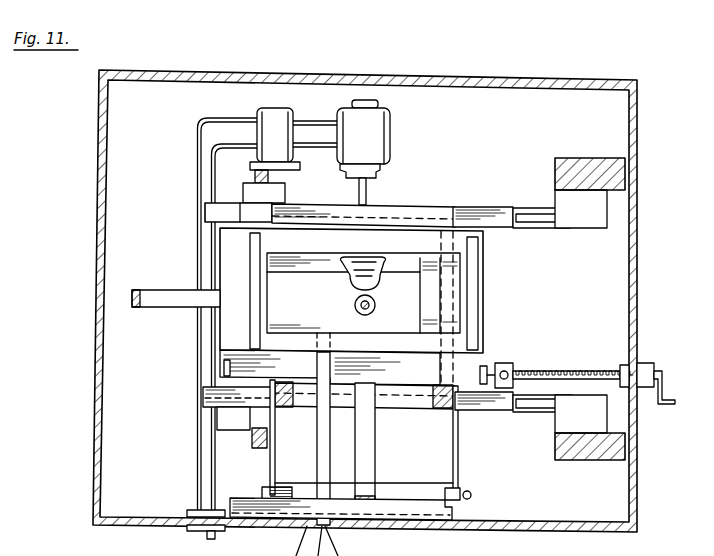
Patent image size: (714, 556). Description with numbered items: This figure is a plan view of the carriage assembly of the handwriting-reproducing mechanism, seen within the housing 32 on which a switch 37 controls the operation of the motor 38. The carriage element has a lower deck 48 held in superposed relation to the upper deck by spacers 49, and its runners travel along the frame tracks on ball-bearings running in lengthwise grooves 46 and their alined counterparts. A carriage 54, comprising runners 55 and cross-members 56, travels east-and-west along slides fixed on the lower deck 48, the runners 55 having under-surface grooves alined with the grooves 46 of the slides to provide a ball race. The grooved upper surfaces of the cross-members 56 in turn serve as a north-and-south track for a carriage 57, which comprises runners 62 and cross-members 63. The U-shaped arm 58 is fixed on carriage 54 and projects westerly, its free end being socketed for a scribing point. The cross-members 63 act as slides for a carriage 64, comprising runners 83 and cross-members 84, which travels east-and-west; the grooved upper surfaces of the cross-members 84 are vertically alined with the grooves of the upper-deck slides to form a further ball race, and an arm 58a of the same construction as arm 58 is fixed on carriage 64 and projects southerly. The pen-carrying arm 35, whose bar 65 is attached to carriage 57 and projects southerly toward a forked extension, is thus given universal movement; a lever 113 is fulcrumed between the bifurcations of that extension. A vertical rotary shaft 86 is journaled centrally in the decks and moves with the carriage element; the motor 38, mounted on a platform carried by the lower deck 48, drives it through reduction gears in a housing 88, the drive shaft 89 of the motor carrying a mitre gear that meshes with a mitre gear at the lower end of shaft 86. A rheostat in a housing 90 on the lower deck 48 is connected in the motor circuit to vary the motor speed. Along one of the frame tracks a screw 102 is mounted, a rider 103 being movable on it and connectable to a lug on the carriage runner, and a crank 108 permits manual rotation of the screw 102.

The housing 32 is at (637, 276).
The arm 35 is at (318, 462).
The switch 37 is at (214, 539).
The motor 38 is at (363, 132).
The groove 46 is at (548, 222).
The lower deck 48 is at (363, 293).
The spacers 49 is at (286, 407).
The carriage 54 is at (245, 392).
The runners 55 is at (330, 367).
The cross-members 56 is at (226, 366).
The carriage 57 is at (248, 289).
The U-shaped arm 58 is at (160, 296).
The arm 58a is at (375, 458).
The runners 62 is at (249, 321).
The cross-members 63 is at (258, 348).
The carriage 64 is at (283, 343).
The bar 65 is at (318, 437).
The runners 83 is at (351, 290).
The cross-members 84 is at (479, 296).
The vertical rotary shaft 86 is at (376, 304).
The housing 88 is at (346, 174).
The drive shaft 89 is at (366, 192).
The housing 90 is at (275, 139).
The screw 102 is at (575, 372).
The rider 103 is at (505, 368).
The crank 108 is at (658, 375).
The lever 113 is at (332, 541).